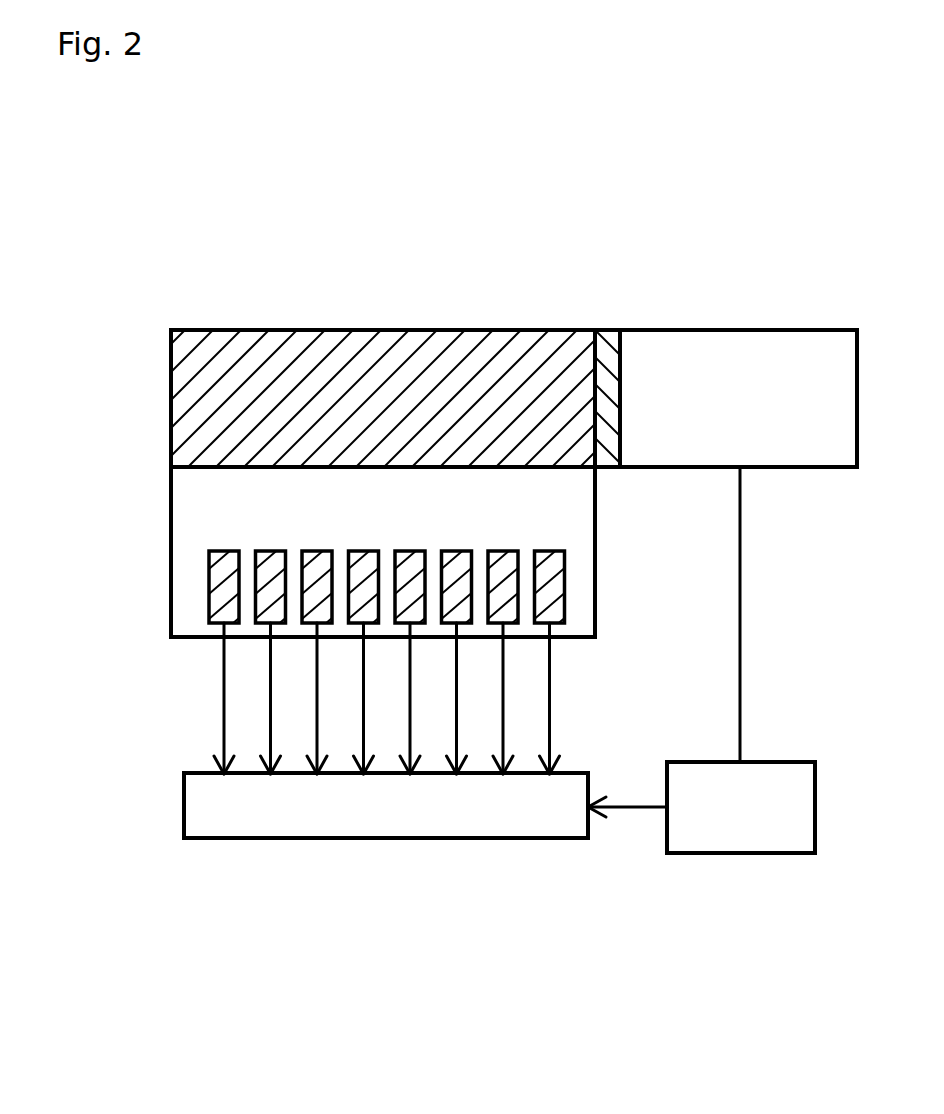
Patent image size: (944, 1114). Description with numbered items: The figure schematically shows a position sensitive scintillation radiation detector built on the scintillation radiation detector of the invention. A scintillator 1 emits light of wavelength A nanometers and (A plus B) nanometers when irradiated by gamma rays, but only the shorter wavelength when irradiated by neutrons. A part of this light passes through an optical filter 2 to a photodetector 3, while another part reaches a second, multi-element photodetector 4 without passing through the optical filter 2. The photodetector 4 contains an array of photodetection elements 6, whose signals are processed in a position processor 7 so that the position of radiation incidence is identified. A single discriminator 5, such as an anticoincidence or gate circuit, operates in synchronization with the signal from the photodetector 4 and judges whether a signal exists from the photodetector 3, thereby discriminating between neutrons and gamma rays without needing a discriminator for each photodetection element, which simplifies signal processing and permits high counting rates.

The scintillator 1 is at (547, 347).
The optical filter 2 is at (607, 347).
The photodetector 3 is at (717, 348).
The photodetector 4 is at (188, 517).
The discriminator 5 is at (748, 827).
The photodetection elements 6 is at (215, 580).
The position processor 7 is at (215, 804).